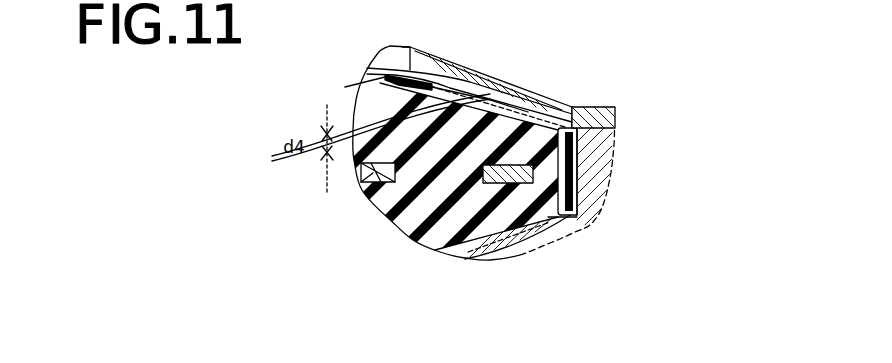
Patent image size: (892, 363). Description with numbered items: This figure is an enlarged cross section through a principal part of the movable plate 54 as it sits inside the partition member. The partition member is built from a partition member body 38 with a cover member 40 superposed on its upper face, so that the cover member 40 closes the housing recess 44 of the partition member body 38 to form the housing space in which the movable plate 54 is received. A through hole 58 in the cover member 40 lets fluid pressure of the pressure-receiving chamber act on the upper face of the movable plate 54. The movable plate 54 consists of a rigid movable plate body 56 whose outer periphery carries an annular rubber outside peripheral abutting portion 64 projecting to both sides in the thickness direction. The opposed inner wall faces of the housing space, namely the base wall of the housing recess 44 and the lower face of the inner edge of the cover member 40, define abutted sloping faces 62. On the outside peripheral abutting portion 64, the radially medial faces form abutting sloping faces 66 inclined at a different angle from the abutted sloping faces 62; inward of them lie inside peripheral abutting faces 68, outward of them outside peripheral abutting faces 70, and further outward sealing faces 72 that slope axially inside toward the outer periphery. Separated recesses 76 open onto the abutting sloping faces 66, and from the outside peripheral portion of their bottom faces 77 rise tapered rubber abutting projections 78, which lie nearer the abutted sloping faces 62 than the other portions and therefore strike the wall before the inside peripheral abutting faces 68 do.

The partition member body 38 is at (600, 147).
The cover member 40 is at (613, 120).
The housing recess 44 is at (578, 140).
The movable plate 54 is at (575, 181).
The movable plate body 56 is at (377, 177).
The through hole 58 is at (408, 62).
The abutted sloping face 62 is at (472, 95).
The outside peripheral abutting portion 64 is at (427, 217).
The abutting sloping face 66 is at (457, 85).
The inside peripheral abutting face 68 is at (398, 76).
The outside peripheral abutting face 70 is at (543, 110).
The sealing face 72 is at (560, 104).
The separated recess 76 is at (346, 87).
The bottom face 77 is at (381, 130).
The abutting projection 78 is at (507, 108).